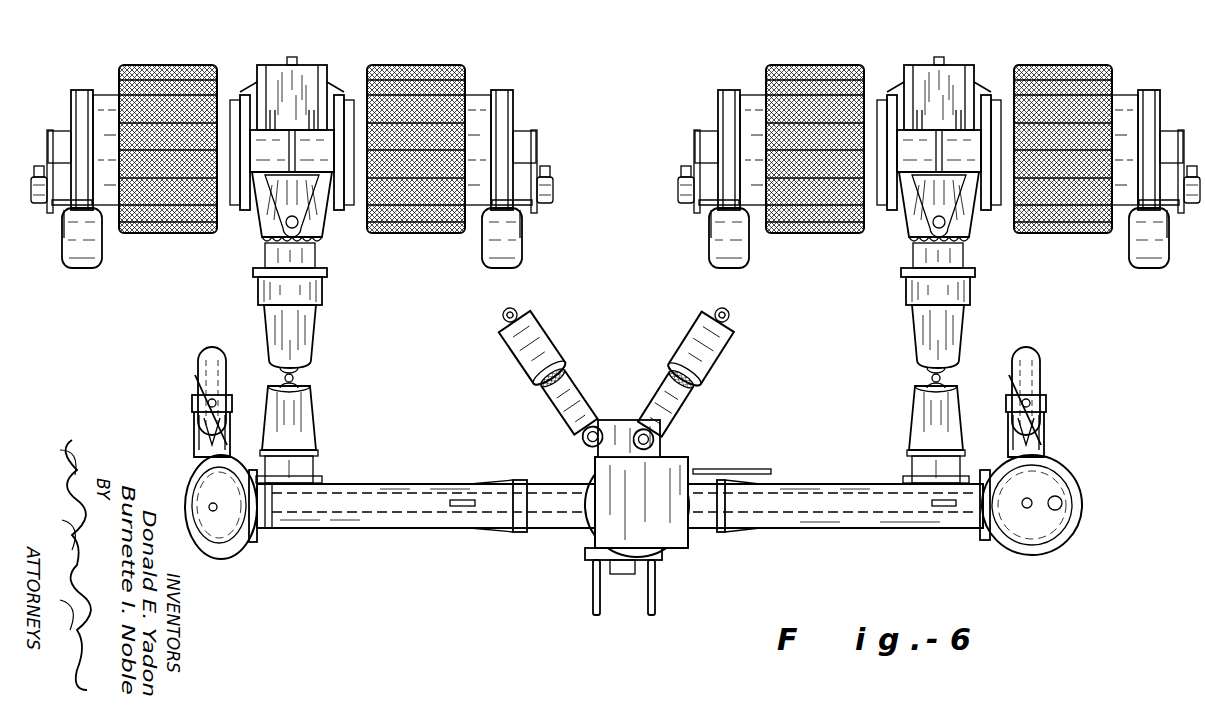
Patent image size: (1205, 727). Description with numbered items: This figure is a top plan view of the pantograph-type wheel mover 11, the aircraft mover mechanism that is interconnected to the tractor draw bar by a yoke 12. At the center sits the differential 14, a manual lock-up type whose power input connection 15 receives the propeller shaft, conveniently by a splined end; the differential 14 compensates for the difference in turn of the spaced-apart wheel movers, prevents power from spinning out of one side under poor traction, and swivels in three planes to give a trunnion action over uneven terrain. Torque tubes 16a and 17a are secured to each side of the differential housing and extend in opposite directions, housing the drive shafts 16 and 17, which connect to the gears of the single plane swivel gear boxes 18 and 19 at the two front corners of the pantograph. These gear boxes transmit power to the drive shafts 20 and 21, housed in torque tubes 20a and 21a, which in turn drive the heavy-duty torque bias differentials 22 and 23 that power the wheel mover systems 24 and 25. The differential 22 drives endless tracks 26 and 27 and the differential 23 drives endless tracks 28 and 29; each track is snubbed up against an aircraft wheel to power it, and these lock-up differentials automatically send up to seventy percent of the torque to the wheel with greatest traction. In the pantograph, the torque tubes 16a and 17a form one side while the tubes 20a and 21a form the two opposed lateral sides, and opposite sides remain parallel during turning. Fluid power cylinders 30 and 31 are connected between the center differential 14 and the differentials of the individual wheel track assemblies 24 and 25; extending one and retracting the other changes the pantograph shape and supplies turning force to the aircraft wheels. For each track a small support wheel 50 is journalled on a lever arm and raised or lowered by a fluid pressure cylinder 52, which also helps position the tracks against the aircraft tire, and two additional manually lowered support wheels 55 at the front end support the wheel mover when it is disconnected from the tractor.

The wheel mover 11 is at (426, 517).
The yoke 12 is at (657, 603).
The differential 14 is at (590, 533).
The power input connection 15 is at (625, 578).
The drive shaft 16 is at (405, 513).
The torque tube 16a is at (414, 496).
The drive shaft 17 is at (810, 506).
The torque tube 17a is at (855, 522).
The single plane swivel gear box 18 is at (240, 545).
The single plane swivel gear box 19 is at (1070, 530).
The drive shaft 20 is at (299, 383).
The torque tube 20a is at (299, 419).
The drive shaft 21 is at (946, 380).
The torque tube 21a is at (920, 395).
The torque bias differential 22 is at (322, 222).
The torque bias differential 23 is at (972, 216).
The wheel mover system 24 is at (334, 69).
The wheel mover system 25 is at (988, 80).
The endless track 26 is at (163, 235).
The endless track 27 is at (418, 232).
The endless track 28 is at (788, 68).
The endless track 29 is at (1080, 235).
The fluid power cylinder 30 is at (556, 336).
The fluid power cylinder 31 is at (718, 345).
The small wheel 50 is at (93, 262).
The fluid pressure cylinder 52 is at (556, 187).
The landing or support wheel 55 is at (192, 403).